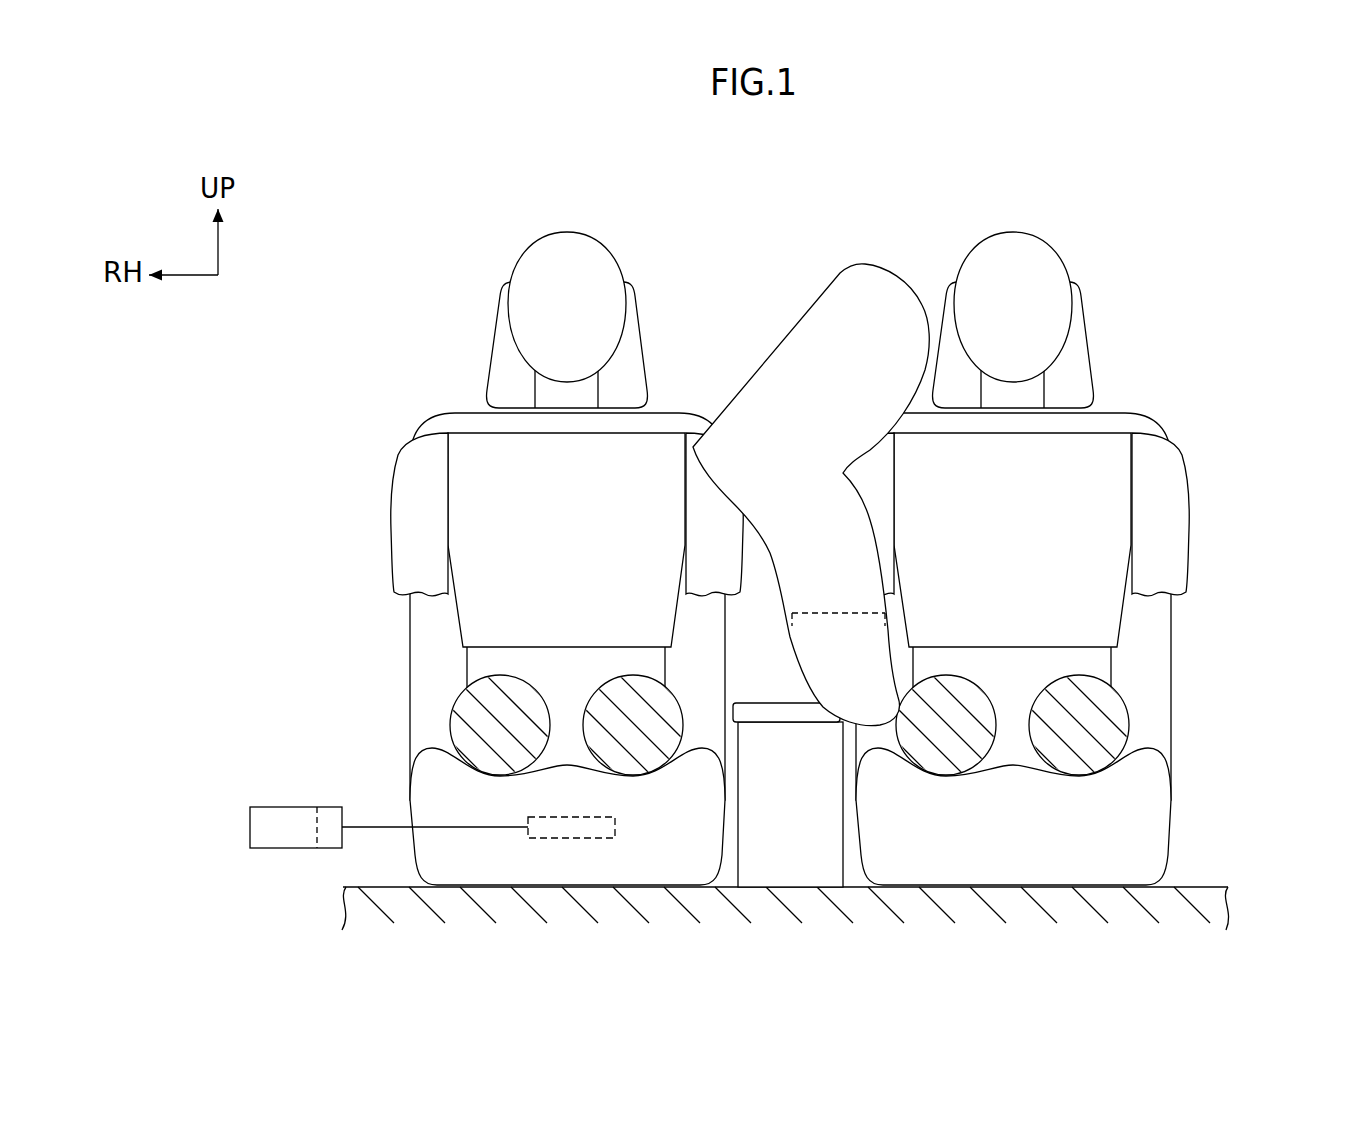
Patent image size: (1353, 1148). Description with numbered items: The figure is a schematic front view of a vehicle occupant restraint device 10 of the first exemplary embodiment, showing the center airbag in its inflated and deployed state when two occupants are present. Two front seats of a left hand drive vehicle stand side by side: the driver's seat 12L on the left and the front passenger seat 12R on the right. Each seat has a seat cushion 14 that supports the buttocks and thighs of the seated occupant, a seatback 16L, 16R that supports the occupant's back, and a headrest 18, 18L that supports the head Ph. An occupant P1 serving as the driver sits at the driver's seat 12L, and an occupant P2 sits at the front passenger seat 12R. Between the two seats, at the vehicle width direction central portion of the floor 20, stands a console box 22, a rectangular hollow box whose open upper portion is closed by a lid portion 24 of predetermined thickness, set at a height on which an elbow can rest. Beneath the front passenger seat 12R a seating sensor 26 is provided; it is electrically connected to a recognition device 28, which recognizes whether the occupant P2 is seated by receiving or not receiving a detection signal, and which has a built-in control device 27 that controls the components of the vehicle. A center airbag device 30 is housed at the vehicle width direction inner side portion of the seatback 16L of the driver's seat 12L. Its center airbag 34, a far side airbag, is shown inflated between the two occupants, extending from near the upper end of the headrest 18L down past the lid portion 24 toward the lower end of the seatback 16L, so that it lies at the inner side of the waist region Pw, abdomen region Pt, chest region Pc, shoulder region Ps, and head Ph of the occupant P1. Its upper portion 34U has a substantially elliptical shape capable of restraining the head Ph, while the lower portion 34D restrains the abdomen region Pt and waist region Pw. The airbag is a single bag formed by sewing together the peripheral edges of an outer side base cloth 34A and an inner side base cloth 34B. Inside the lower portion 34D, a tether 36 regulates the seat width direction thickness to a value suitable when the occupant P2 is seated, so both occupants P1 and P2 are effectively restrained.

The vehicle occupant restraint device 10 is at (770, 289).
The front passenger seat 12R is at (512, 558).
The driver's seat 12L is at (1069, 570).
The seat cushion 14 is at (418, 780).
The seatback of the front passenger seat 16R is at (418, 418).
The seatback of the driver's seat 16L is at (1163, 418).
The headrest 18 is at (500, 291).
The headrest of the driver's seat 18L is at (1090, 326).
The floor 20 is at (1216, 886).
The console box 22 is at (740, 856).
The lid portion 24 is at (763, 703).
The seating sensor 26 is at (617, 829).
The control device 27 is at (273, 803).
The recognition device 28 is at (327, 817).
The center airbag device 30 is at (753, 359).
The center airbag 34 is at (850, 261).
The upper portion 34U is at (886, 296).
The seat width direction outer side base cloth 34A is at (837, 472).
The seat width direction inner side base cloth 34B is at (866, 508).
The lower portion 34D is at (793, 580).
The tether 36 is at (843, 613).
The occupant P1 is at (1048, 500).
The occupant P2 is at (511, 247).
The head Ph is at (1055, 272).
The shoulder region Ps is at (1103, 422).
The chest region Pc is at (1015, 492).
The abdomen region Pt is at (1028, 620).
The waist region Pw is at (1112, 662).